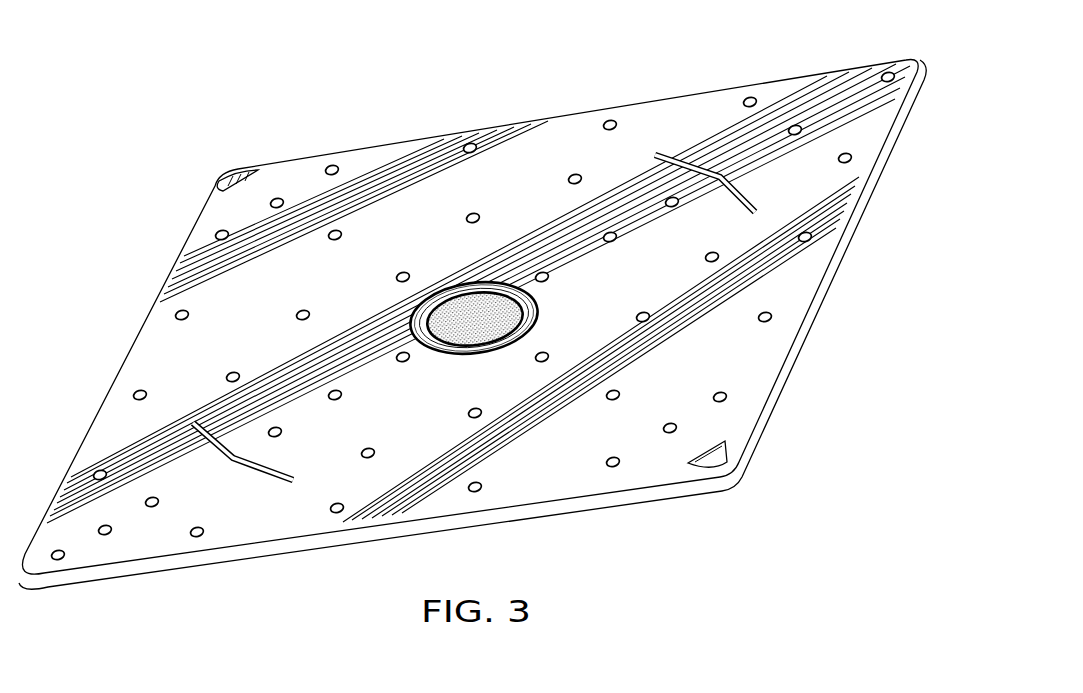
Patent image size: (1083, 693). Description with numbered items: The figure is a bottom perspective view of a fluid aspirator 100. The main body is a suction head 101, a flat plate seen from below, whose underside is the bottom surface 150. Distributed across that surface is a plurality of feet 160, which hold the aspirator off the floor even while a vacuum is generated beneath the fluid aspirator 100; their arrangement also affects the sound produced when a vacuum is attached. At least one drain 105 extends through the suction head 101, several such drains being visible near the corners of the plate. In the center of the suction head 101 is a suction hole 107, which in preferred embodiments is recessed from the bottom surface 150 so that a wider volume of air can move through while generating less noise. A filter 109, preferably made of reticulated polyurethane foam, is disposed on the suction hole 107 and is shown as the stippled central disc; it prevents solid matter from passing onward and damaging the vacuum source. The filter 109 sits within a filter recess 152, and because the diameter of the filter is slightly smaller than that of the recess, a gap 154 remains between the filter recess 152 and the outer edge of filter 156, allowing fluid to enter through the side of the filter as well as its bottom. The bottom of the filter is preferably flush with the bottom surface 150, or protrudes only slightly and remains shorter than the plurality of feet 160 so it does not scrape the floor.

The fluid aspirator 100 is at (748, 55).
The suction head 101 is at (478, 306).
The drain 105 is at (235, 172).
The suction hole 107 is at (533, 314).
The filter 109 is at (460, 332).
The bottom surface 150 is at (404, 152).
The filter recess 152 is at (436, 292).
The gap 154 is at (523, 290).
The outer edge of filter 156 is at (500, 344).
The plurality of feet 160 is at (771, 316).